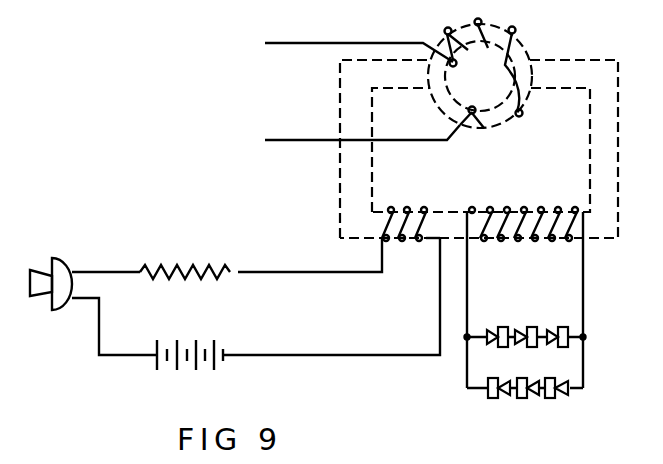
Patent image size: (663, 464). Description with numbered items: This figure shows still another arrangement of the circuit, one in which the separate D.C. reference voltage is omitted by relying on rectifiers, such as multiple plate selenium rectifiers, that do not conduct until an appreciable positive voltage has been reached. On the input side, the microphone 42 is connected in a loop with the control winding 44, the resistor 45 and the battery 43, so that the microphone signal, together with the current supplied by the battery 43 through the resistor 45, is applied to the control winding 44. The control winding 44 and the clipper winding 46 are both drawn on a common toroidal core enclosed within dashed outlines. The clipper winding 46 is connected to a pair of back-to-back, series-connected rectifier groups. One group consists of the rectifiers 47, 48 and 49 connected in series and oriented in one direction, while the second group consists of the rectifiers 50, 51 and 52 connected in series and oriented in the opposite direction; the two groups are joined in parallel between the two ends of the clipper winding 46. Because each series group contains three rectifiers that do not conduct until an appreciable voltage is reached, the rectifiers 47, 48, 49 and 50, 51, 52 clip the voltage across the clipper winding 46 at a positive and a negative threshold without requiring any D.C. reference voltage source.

The microphone 42 is at (63, 262).
The battery 43 is at (203, 349).
The control winding 44 is at (412, 211).
The resistor 45 is at (200, 268).
The clipper winding 46 is at (522, 211).
The rectifier 47 is at (503, 327).
The rectifier 48 is at (534, 327).
The rectifier 49 is at (568, 327).
The rectifier 50 is at (493, 399).
The rectifier 51 is at (523, 399).
The rectifier 52 is at (551, 399).